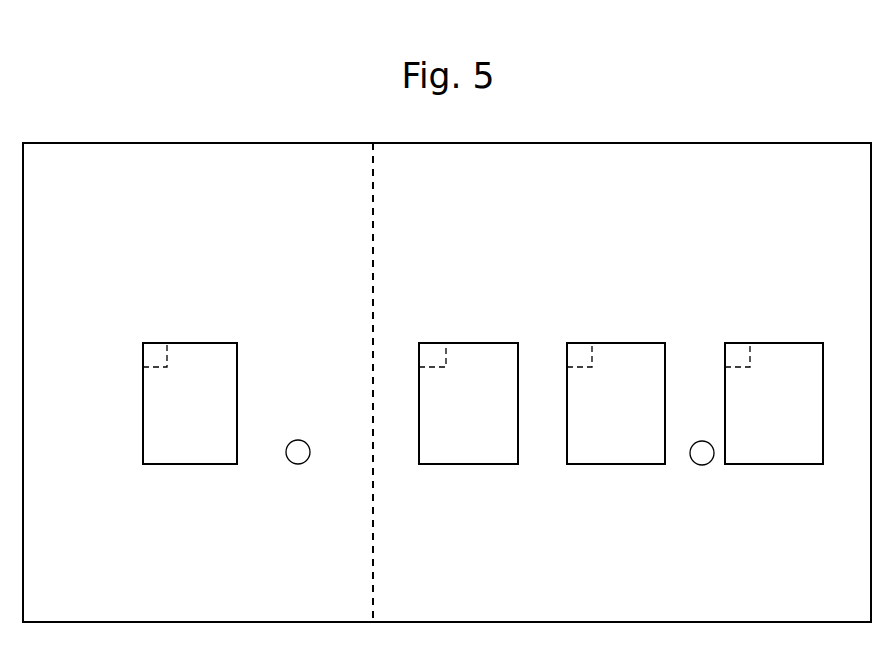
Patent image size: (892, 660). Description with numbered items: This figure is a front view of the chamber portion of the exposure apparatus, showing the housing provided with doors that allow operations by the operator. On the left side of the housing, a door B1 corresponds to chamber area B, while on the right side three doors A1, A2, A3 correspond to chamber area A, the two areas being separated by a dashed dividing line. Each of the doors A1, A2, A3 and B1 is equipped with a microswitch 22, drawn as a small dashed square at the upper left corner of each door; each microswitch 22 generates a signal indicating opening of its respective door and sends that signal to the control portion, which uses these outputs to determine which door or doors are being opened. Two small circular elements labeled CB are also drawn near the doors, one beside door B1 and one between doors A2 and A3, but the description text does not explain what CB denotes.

The microswitch 22 is at (152, 343).
The door B1 is at (191, 464).
The door A1 is at (470, 464).
The door A2 is at (618, 464).
The door A3 is at (776, 464).
The alignment mark CB is at (299, 464).